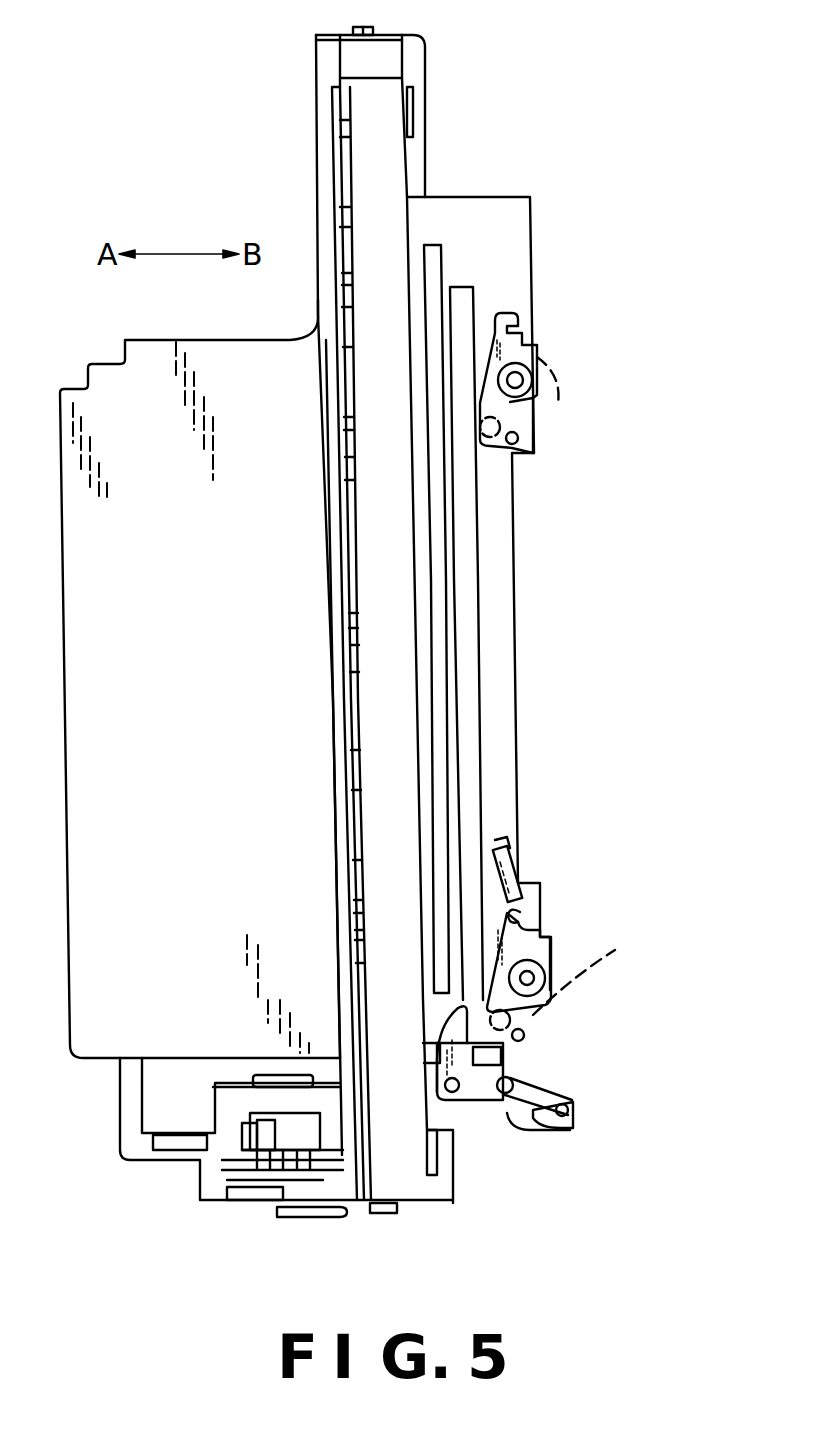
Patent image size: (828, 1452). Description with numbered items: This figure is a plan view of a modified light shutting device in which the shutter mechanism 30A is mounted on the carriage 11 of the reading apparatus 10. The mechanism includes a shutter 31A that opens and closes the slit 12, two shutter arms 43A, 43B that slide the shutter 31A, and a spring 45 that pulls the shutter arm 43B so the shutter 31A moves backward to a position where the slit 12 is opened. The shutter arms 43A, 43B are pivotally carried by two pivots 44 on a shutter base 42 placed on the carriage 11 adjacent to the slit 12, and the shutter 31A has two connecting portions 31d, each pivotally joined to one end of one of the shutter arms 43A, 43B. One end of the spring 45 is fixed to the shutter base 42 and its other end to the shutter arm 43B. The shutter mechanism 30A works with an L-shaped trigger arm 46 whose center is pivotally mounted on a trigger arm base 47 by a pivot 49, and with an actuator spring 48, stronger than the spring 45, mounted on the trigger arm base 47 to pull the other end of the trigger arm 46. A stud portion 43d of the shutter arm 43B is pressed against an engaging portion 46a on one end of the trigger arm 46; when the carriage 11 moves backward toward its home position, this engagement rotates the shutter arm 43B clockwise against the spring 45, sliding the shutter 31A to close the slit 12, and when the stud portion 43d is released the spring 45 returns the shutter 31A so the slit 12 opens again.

The process cartridge 10 is at (379, 622).
The carriage 11 is at (427, 115).
The slit 12 is at (440, 625).
The shutter mechanism 30A is at (520, 507).
The shutter 31A is at (468, 572).
The connecting portions 31d is at (517, 467).
The shutter base 42 is at (547, 552).
The shutter arm 43A is at (508, 402).
The shutter arm 43B is at (540, 935).
The stud portion 43d is at (547, 1027).
The pivots 44 is at (533, 378).
The spring 45 is at (515, 855).
The trigger arm 46 is at (456, 1069).
The engaging portion 46a is at (455, 1048).
The trigger arm base 47 is at (532, 1055).
The spring 48 is at (553, 1097).
The pivot 49 is at (470, 1123).